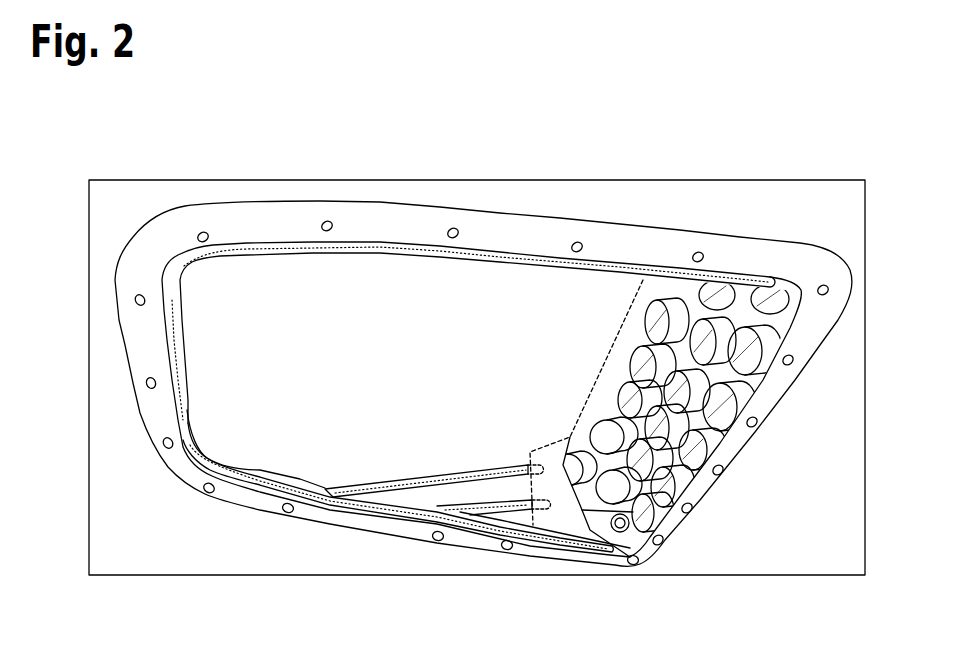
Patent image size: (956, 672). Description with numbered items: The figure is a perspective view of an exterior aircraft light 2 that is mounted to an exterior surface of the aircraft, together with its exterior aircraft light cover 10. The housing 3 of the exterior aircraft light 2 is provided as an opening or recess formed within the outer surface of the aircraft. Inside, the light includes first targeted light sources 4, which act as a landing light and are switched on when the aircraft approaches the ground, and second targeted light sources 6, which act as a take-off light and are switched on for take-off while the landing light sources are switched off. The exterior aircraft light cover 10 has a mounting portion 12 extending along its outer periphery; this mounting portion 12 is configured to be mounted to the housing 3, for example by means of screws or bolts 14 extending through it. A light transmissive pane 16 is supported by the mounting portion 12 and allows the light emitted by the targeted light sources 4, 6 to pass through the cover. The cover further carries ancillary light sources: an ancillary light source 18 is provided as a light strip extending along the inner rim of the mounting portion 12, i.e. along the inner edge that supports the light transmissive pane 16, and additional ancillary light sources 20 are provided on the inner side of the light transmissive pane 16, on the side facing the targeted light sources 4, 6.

The exterior aircraft light 2 is at (733, 158).
The housing 3 is at (657, 203).
The first targeted light sources 4 is at (612, 339).
The second targeted light sources 6 is at (556, 430).
The exterior aircraft light cover 10 is at (143, 203).
The mounting portion 12 is at (527, 240).
The screws or bolts 14 is at (201, 232).
The light transmissive pane 16 is at (386, 369).
The ancillary light source 18 is at (395, 241).
The additional ancillary light sources 20 is at (402, 492).